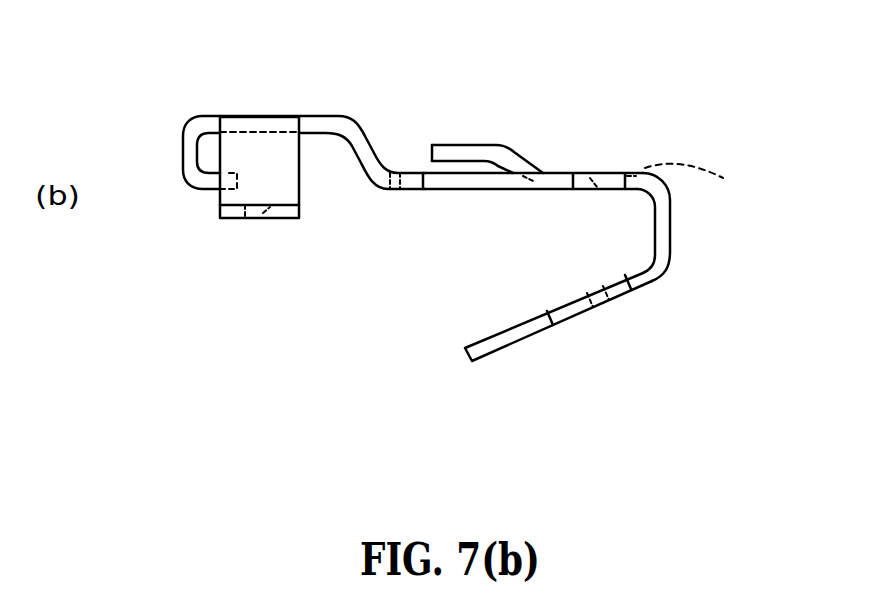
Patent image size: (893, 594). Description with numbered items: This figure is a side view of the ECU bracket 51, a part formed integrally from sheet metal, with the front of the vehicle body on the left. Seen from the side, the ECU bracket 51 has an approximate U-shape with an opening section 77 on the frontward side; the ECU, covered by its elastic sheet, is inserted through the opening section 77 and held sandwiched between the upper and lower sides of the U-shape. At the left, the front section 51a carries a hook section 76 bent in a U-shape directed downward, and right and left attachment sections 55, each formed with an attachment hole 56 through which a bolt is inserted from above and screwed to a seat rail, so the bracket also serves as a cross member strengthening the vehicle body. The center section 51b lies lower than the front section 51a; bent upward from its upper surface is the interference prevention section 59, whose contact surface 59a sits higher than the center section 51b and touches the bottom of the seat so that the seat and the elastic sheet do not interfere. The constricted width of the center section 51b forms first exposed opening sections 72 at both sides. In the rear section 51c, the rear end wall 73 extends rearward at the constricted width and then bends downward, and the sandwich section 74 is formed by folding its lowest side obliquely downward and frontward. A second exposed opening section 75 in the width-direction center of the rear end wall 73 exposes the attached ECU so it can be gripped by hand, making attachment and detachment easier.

The ECU bracket 51 is at (226, 96).
The front section 51a is at (270, 112).
The center section 51b is at (470, 193).
The rear section 51c is at (673, 250).
The attachment section 55 is at (238, 212).
The attachment hole 56 is at (263, 217).
The interference prevention section 59 is at (477, 143).
The contact surface 59a is at (447, 143).
The first exposed opening section 72 is at (596, 185).
The rear end wall 73 is at (672, 212).
The sandwich section 74 is at (540, 330).
The second exposed opening section 75 is at (707, 186).
The hook section 76 is at (183, 150).
The opening section 77 is at (465, 302).